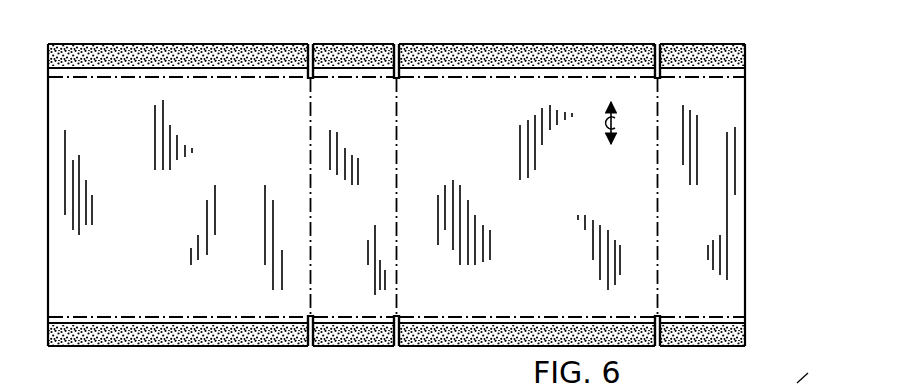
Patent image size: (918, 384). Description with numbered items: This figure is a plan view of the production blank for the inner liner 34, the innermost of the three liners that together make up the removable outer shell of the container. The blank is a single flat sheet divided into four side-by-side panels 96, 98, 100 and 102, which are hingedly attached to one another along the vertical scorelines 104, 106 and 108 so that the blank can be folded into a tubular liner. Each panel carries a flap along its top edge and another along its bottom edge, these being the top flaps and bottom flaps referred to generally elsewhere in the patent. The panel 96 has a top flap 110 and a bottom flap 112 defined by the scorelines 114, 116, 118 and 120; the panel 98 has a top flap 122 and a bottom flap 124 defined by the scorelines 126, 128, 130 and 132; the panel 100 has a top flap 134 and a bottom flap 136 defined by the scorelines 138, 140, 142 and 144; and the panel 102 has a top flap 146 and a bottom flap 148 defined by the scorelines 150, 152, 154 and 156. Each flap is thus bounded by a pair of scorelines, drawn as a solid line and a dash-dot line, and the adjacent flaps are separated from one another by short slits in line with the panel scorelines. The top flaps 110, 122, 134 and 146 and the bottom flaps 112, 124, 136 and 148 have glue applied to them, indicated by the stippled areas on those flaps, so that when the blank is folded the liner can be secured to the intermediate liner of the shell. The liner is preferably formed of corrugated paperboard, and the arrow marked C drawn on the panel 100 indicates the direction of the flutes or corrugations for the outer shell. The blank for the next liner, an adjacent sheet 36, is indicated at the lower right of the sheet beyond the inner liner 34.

The inner liner 34 is at (730, 42).
The adjacent sheet 36 is at (816, 370).
The panel 96 is at (196, 226).
The panel 98 is at (365, 226).
The panel 100 is at (543, 226).
The panel 102 is at (719, 231).
The scoreline 104 is at (310, 168).
The scoreline 106 is at (397, 162).
The scoreline 108 is at (657, 172).
The top flap 110 is at (197, 56).
The bottom flap 112 is at (188, 331).
The scoreline 114 is at (158, 68).
The scoreline 116 is at (155, 77).
The scoreline 118 is at (160, 320).
The scoreline 120 is at (157, 328).
The top flap 122 is at (338, 58).
The bottom flap 124 is at (371, 340).
The scoreline 126 is at (372, 62).
The scoreline 128 is at (370, 77).
The scoreline 130 is at (353, 285).
The scoreline 132 is at (335, 340).
The top flap 134 is at (505, 60).
The bottom flap 136 is at (502, 332).
The scoreline 138 is at (562, 65).
The scoreline 140 is at (550, 77).
The scoreline 142 is at (505, 320).
The scoreline 144 is at (503, 328).
The top flap 146 is at (682, 60).
The bottom flap 148 is at (743, 332).
The scoreline 150 is at (742, 68).
The scoreline 152 is at (735, 88).
The scoreline 154 is at (740, 320).
The scoreline 156 is at (742, 315).